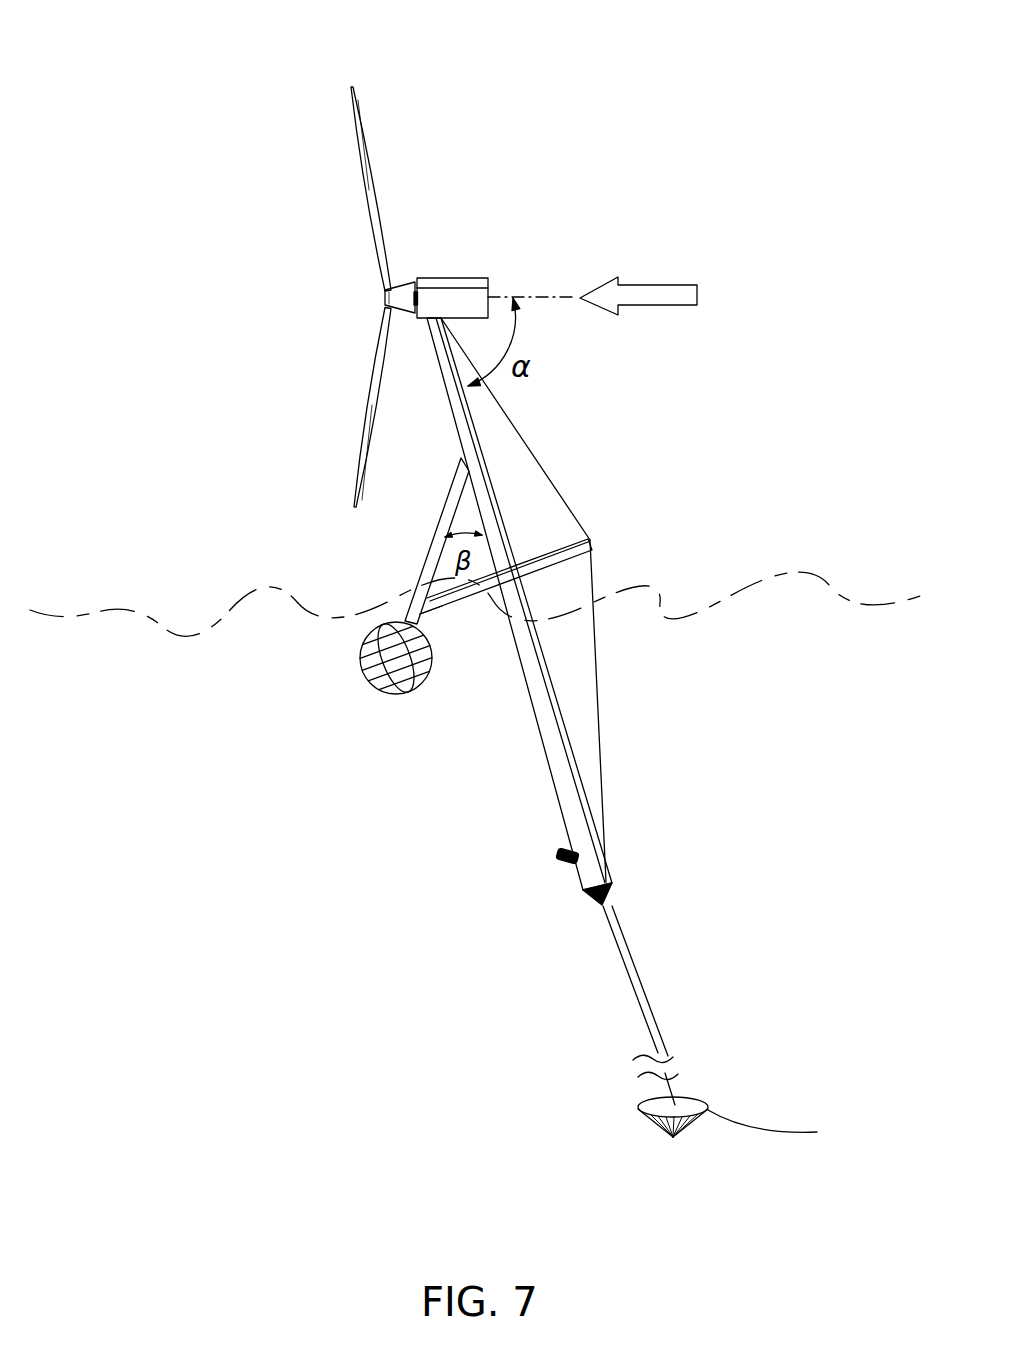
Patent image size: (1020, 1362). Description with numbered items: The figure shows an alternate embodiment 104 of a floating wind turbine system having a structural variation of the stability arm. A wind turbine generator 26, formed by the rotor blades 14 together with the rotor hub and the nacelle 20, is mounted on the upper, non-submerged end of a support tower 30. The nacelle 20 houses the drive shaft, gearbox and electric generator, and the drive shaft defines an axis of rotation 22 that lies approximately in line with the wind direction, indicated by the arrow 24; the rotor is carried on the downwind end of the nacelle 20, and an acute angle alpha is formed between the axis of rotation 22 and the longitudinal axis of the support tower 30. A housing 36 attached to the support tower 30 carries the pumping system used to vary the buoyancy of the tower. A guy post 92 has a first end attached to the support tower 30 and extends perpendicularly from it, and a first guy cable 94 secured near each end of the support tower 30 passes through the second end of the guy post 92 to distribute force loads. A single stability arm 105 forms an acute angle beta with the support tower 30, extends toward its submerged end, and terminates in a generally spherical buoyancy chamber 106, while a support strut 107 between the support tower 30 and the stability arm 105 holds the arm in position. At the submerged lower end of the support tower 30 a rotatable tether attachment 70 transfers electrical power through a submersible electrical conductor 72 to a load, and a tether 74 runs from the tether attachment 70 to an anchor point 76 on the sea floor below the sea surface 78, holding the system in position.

The blades 14 is at (361, 157).
The nacelle 20 is at (483, 279).
The axis of rotation 22 is at (562, 299).
The wind direction arrow 24 is at (667, 305).
The wind turbine generator 26 is at (488, 172).
The support tower 30 is at (438, 375).
The housing 36 is at (572, 863).
The tether attachment 70 is at (617, 885).
The submersible electrical conductor 72 is at (647, 987).
The tether 74 is at (628, 983).
The anchor point 76 is at (638, 1098).
The sea surface 78 is at (832, 583).
The guy post 92 is at (558, 551).
The first guy cable 94 is at (521, 437).
The alternate embodiment 104 is at (606, 148).
The stability arm 105 is at (428, 557).
The buoyancy chamber 106 is at (363, 673).
The support strut 107 is at (442, 615).